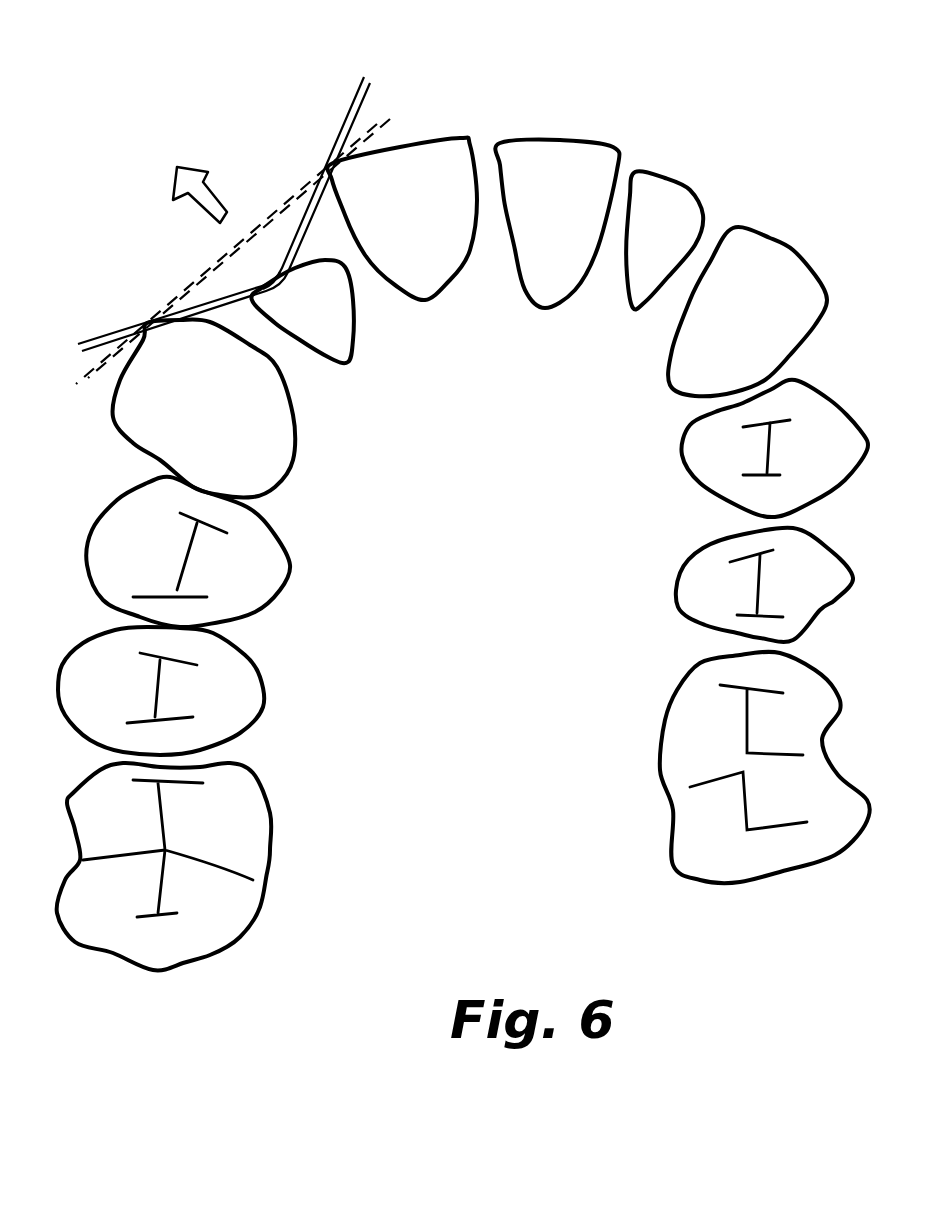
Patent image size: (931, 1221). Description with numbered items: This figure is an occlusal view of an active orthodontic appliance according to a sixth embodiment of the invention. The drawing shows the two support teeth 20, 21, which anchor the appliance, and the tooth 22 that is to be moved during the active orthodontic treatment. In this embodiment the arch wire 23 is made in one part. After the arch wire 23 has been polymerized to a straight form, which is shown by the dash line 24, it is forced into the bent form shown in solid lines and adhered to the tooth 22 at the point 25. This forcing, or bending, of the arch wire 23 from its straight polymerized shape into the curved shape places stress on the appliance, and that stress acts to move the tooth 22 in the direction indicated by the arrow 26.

The support tooth 20 is at (160, 417).
The support tooth 21 is at (427, 173).
The tooth to be moved 22 is at (347, 350).
The arch wire 23 is at (352, 99).
The dash line 24 is at (293, 202).
The point 25 is at (263, 280).
The arrow 26 is at (200, 225).